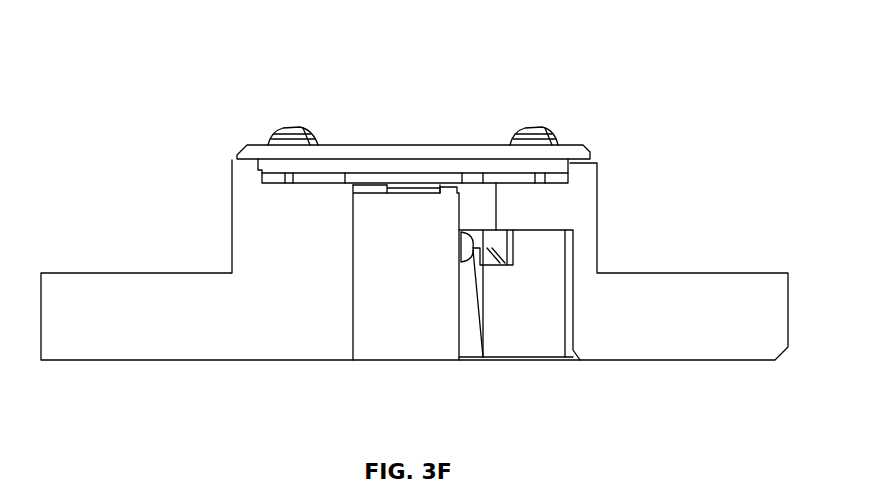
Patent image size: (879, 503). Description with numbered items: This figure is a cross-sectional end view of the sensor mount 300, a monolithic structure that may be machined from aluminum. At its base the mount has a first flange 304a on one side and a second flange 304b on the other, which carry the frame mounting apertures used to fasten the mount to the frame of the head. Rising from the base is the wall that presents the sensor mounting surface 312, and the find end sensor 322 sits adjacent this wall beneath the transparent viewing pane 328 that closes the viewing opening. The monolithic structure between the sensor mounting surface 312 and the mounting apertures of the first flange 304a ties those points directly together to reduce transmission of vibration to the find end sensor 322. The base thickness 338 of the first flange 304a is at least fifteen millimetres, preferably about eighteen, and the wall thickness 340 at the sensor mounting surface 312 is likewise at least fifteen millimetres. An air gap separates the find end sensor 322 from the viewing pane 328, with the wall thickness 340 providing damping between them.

The sensor mount 300 is at (425, 231).
The first flange 304a is at (82, 273).
The second flange 304b is at (692, 273).
The sensor mounting surface 312 is at (353, 317).
The find end sensor 322 is at (418, 192).
The viewing pane 328 is at (250, 145).
The base thickness 338 is at (156, 275).
The wall thickness 340 is at (232, 232).